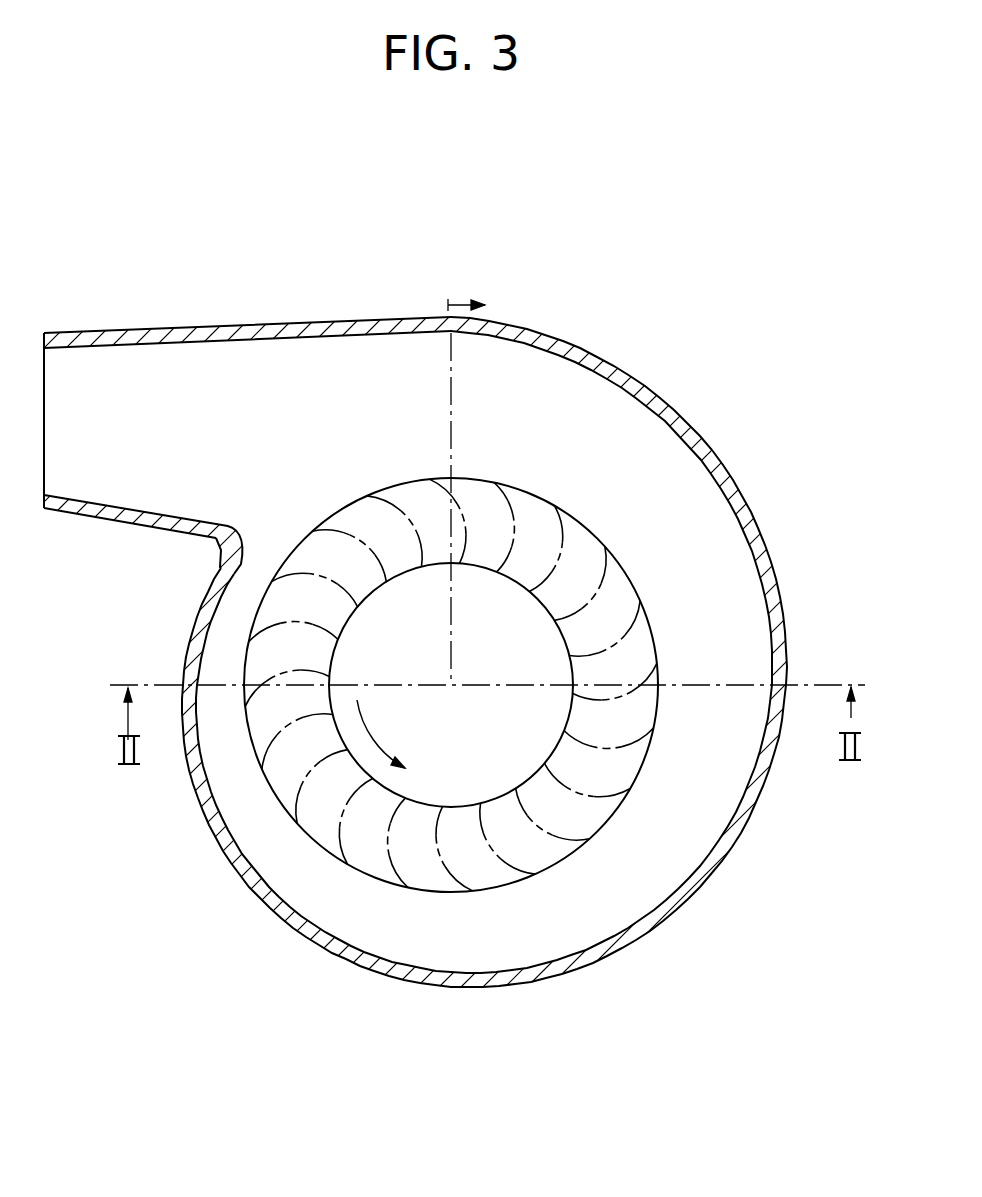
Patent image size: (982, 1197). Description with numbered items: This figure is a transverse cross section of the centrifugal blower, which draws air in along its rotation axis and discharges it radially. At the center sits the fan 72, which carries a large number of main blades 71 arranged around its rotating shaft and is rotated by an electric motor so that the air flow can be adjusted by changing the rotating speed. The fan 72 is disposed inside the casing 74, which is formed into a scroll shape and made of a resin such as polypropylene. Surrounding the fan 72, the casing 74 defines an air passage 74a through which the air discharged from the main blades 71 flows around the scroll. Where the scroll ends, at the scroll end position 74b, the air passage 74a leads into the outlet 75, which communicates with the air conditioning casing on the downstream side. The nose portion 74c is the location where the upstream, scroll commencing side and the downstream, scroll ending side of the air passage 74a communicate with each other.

The main blades 71 is at (578, 498).
The fan 72 is at (648, 612).
The casing 74 is at (607, 362).
The air passage 74a is at (717, 593).
The scroll end position 74b is at (448, 315).
The nose portion 74c is at (220, 547).
The outlet 75 is at (120, 365).